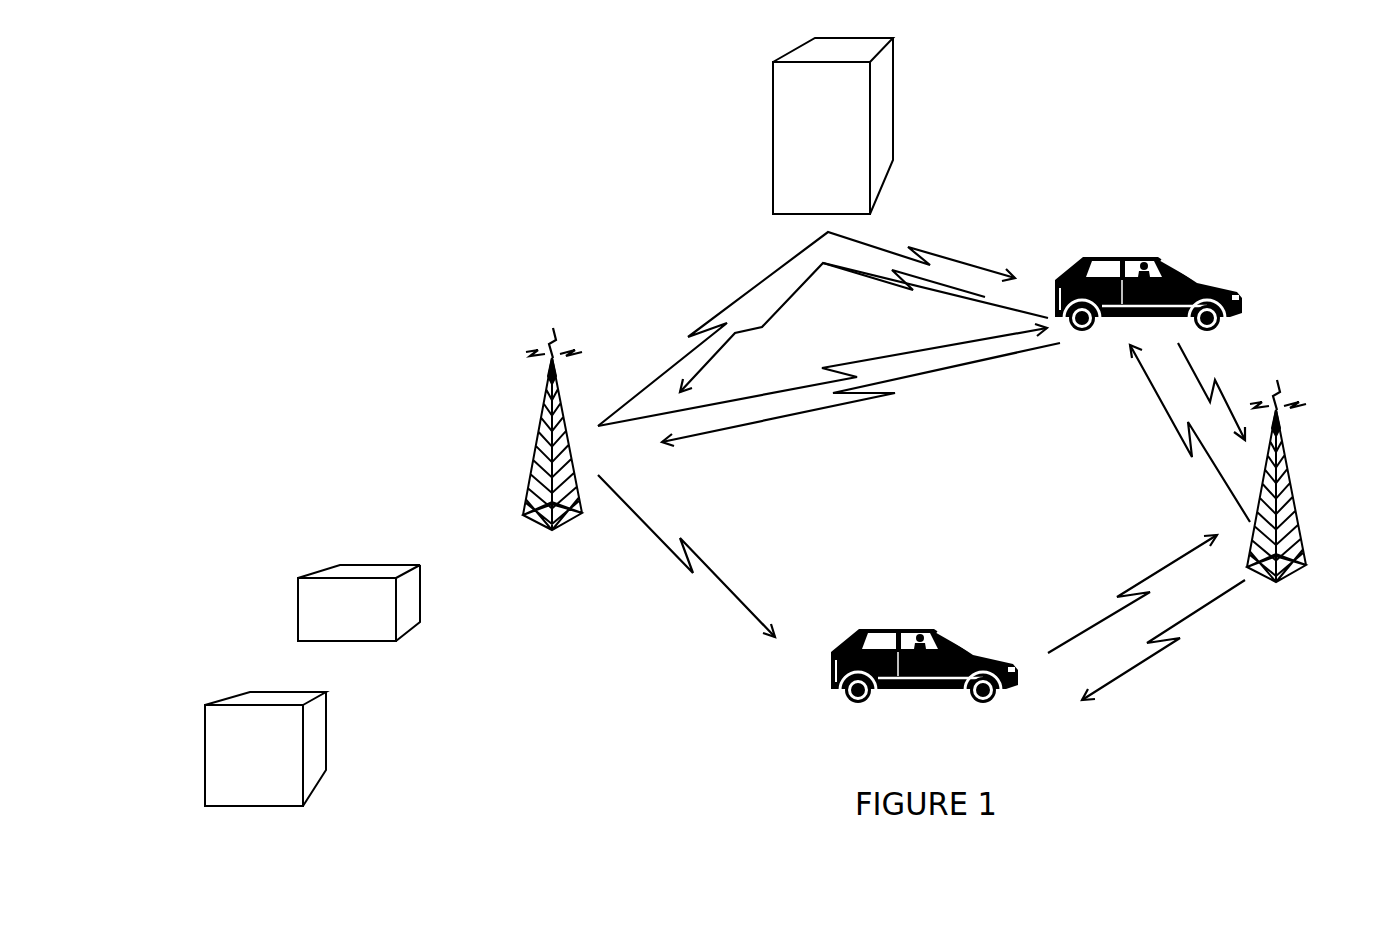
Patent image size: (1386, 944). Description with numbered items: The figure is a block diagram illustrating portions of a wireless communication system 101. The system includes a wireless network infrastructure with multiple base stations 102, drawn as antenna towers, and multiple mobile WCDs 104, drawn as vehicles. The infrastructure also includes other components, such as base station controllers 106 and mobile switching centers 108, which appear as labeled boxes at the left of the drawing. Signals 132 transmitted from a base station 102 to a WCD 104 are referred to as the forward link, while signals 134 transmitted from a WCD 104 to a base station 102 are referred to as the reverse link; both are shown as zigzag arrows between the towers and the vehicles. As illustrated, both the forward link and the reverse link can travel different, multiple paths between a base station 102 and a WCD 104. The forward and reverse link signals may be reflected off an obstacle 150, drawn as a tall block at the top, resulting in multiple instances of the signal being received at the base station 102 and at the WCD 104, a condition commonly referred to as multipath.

The wireless communication system 101 is at (313, 210).
The base station 102 is at (533, 445).
The WCD 104 is at (1243, 310).
The base station controller 106 is at (297, 610).
The mobile switching center 108 is at (205, 758).
The signals 132 is at (767, 273).
The signals 134 is at (785, 294).
The obstacle 150 is at (772, 138).